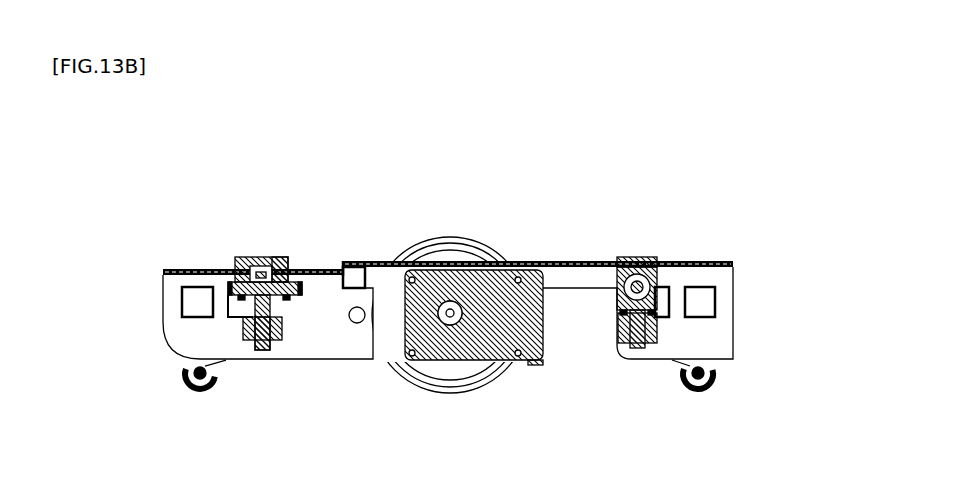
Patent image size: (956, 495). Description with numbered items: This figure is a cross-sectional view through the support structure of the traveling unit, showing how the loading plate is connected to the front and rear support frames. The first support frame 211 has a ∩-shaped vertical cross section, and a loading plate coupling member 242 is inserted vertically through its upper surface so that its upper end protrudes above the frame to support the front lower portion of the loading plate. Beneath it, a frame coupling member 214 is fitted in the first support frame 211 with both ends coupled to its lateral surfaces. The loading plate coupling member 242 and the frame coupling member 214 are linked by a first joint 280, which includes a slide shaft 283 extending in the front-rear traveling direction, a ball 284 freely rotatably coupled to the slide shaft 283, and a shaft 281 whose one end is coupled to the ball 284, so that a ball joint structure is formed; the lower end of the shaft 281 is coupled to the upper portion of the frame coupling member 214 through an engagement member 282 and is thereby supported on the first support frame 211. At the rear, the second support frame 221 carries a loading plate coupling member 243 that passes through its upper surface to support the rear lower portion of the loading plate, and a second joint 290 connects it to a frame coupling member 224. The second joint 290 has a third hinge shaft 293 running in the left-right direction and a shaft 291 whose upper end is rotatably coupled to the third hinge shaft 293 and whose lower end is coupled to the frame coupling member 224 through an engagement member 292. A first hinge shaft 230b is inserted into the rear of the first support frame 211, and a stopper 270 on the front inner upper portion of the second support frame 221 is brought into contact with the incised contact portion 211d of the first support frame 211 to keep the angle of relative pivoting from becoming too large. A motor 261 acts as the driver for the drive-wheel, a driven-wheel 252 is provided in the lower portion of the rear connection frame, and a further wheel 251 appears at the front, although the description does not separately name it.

The first support frame 211 is at (188, 338).
The contact portion 211d is at (317, 269).
The frame coupling member 214 is at (282, 330).
The second support frame 221 is at (708, 261).
The frame coupling member 224 is at (657, 333).
The first hinge shaft 230b is at (357, 323).
The loading plate coupling member 242 is at (248, 257).
The loading plate coupling member 243 is at (647, 257).
The first caster wheel 251 is at (198, 392).
The driven-wheel 252 is at (700, 393).
The motor 261 is at (451, 326).
The stopper 270 is at (356, 266).
The first joint 280 is at (213, 245).
The shaft 281 is at (265, 350).
The engagement member 282 is at (230, 303).
The slide shaft 283 is at (228, 280).
The ball 284 is at (274, 257).
The second joint 290 is at (598, 248).
The shaft 291 is at (634, 348).
The engagement member 292 is at (690, 315).
The third hinge shaft 293 is at (631, 258).